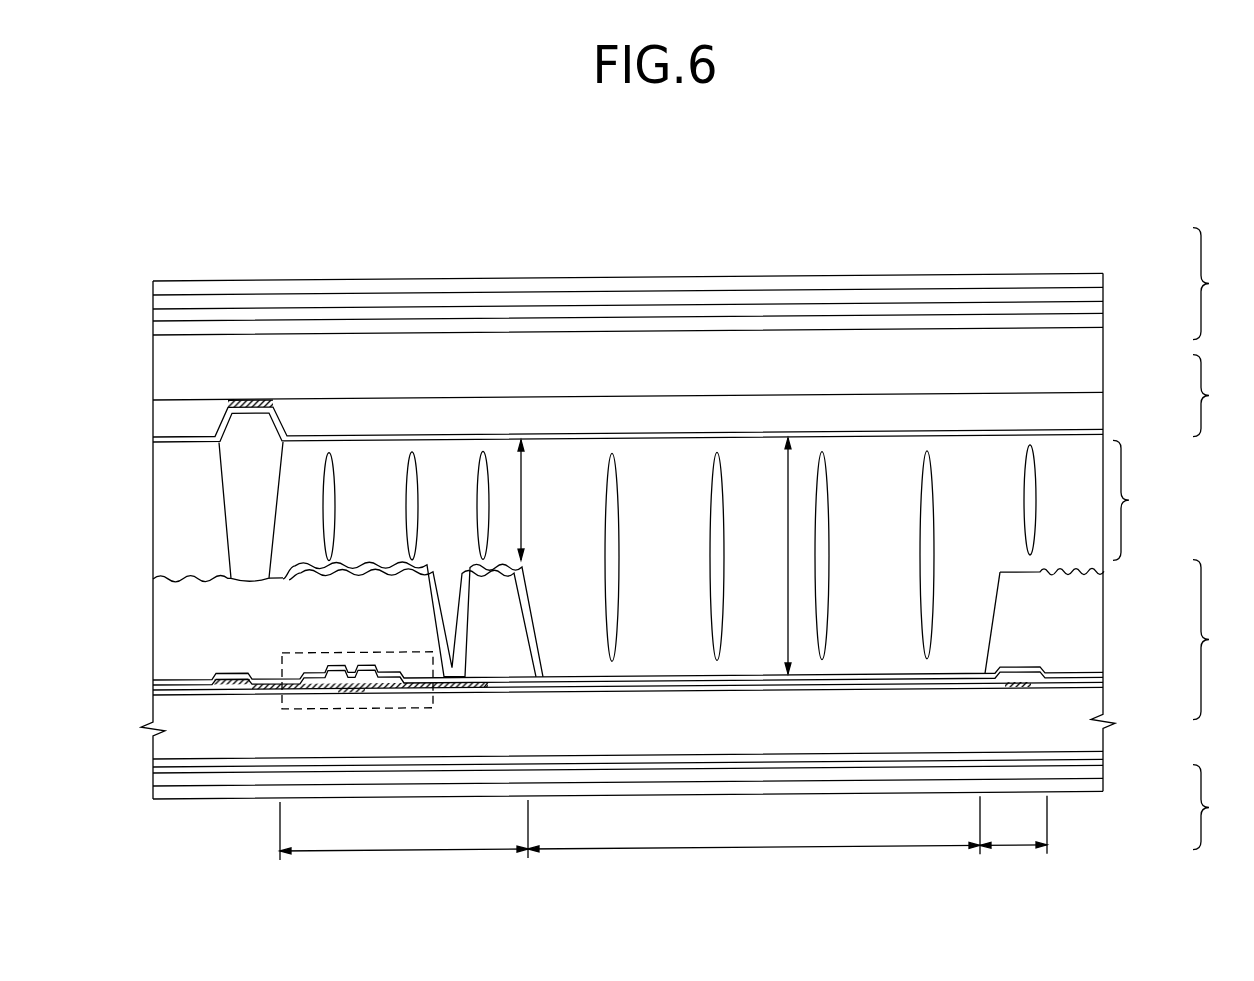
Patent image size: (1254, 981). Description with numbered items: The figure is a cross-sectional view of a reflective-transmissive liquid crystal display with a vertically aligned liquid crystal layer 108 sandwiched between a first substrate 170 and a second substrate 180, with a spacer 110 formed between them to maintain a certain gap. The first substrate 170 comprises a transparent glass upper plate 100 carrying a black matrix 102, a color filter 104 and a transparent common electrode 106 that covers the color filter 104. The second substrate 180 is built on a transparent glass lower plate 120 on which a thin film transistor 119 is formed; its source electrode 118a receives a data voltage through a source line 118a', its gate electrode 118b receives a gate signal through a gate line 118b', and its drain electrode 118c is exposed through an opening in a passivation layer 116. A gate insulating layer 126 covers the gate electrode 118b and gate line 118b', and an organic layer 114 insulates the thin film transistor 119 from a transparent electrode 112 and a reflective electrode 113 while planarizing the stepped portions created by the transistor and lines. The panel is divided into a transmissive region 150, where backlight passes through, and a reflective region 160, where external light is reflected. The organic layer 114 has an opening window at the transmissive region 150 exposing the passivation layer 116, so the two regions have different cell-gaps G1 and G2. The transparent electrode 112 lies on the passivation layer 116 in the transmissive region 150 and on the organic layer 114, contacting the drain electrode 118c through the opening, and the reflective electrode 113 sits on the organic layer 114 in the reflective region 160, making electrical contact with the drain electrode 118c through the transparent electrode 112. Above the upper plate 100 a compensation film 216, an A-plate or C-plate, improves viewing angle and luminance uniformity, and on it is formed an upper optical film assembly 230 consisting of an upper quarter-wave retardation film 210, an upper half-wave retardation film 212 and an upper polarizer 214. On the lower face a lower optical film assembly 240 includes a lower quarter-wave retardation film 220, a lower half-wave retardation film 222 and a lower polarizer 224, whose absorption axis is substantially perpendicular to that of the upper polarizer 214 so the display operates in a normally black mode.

The upper polarizer 214 is at (1105, 291).
The upper λ/2 retardation film 212 is at (1105, 305).
The upper λ/4 retardation film 210 is at (1105, 316).
The compensation film 216 is at (1105, 328).
The upper optical film assembly 230 is at (1221, 283).
The upper plate 100 is at (1105, 381).
The color filter 104 is at (1105, 418).
The common electrode 106 is at (1105, 440).
The first substrate 170 is at (1221, 395).
The black matrix 102 is at (240, 401).
The spacer 110 is at (222, 511).
The liquid crystal layer 108 is at (747, 552).
The cell-gap G1 is at (512, 500).
The cell-gap G2 is at (776, 556).
The reflective electrode 113 is at (528, 565).
The organic layer 114 is at (165, 641).
The transparent electrode 112 is at (745, 683).
The passivation layer 116 is at (1105, 683).
The gate insulating layer 126 is at (1105, 692).
The lower plate 120 is at (1105, 746).
The second substrate 180 is at (1221, 639).
The source line 118a' is at (231, 719).
The source electrode 118a is at (306, 721).
The gate electrode 118b is at (369, 724).
The drain electrode 118c is at (415, 692).
The thin film transistor 119 is at (447, 704).
The gate line 118b' is at (1018, 715).
The lower λ/4 retardation film 220 is at (1105, 767).
The lower λ/2 retardation film 222 is at (1105, 778).
The lower polarizer 224 is at (1105, 798).
The lower optical film assembly 240 is at (1221, 806).
The reflective region 160 is at (697, 827).
The transmissive region 150 is at (754, 835).